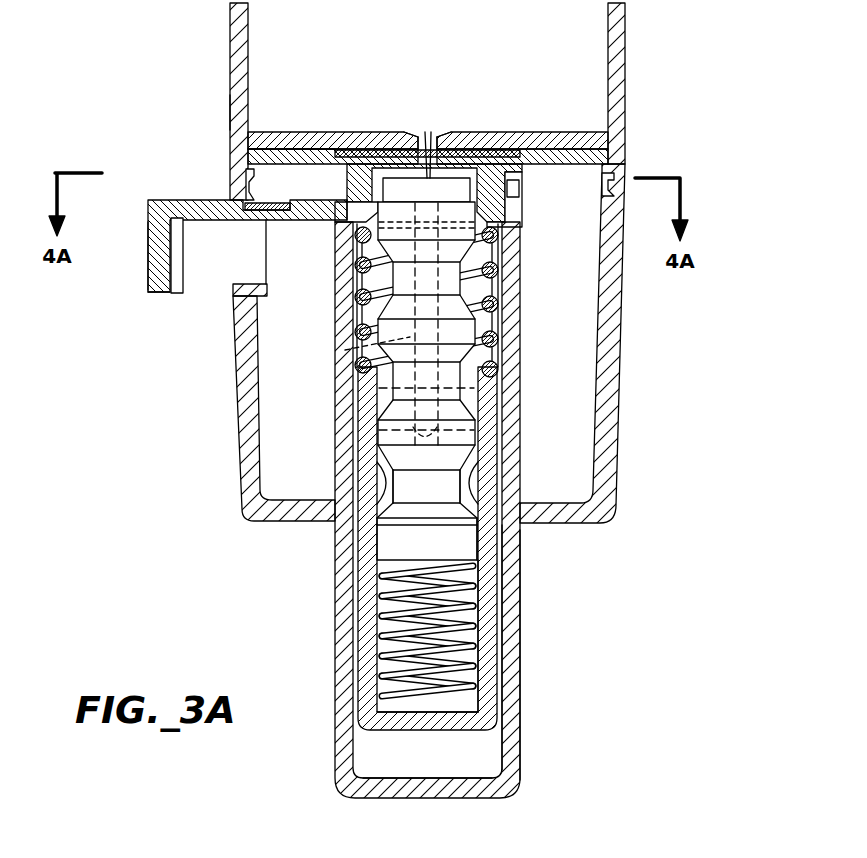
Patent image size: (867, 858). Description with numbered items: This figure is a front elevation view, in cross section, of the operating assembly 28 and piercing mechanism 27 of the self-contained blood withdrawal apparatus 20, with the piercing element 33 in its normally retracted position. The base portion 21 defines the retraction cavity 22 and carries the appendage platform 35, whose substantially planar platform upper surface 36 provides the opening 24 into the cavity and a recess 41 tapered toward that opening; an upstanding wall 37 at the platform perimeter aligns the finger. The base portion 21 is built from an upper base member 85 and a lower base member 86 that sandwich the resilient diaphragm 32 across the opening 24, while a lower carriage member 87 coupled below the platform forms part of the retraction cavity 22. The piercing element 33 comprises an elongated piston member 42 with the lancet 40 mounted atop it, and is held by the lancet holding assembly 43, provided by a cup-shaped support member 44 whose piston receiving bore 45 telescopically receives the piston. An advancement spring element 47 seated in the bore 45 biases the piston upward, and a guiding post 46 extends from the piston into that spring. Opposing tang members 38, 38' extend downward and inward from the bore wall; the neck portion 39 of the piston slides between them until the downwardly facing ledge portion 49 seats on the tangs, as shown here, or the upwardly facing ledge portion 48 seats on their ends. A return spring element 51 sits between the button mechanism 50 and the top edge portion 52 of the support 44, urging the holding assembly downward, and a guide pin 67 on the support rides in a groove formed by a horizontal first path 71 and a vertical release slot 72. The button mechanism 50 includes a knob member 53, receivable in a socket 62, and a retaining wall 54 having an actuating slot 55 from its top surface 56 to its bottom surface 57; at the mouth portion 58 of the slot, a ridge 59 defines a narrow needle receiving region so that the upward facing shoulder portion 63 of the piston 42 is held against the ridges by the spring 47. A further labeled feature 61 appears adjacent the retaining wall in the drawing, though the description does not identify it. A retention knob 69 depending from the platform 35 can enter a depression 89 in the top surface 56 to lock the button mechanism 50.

The blood withdrawal apparatus 20 is at (134, 48).
The base portion 21 is at (632, 76).
The cavity 22 is at (500, 323).
The opening 24 is at (422, 132).
The appendage piercing mechanism 27 is at (427, 112).
The operating assembly 28 is at (293, 408).
The diaphragm 32 is at (392, 164).
The piercing element 33 is at (350, 580).
The appendage platform 35 is at (232, 108).
The platform upper surface 36 is at (307, 131).
The upstanding wall 37 is at (230, 60).
The tang member 38 is at (370, 385).
The tang member 38' is at (534, 539).
The neck portion 39 is at (440, 497).
The lancet 40 is at (437, 186).
The recess 41 is at (466, 200).
The piston member 42 is at (352, 627).
The lancet holding assembly 43 is at (380, 736).
The cup-shaped support member 44 is at (486, 660).
The piston receiving bore 45 is at (474, 623).
The guiding post 46 is at (387, 653).
The advancement spring element 47 is at (470, 680).
The upwardly facing ledge portion 48 is at (505, 548).
The downwardly facing ledge portion 49 is at (467, 453).
The button mechanism 50 is at (150, 298).
The return spring element 51 is at (500, 317).
The top edge portion 52 is at (500, 364).
The knob member 53 is at (150, 240).
The retaining wall 54 is at (175, 200).
The actuating slot 55 is at (273, 240).
The top surface 56 is at (210, 200).
The bottom surface 57 is at (150, 255).
The mouth portion 58 is at (510, 212).
The ridge 59 is at (519, 190).
The valve housing lip 61 is at (298, 210).
The socket 62 is at (262, 285).
The shoulder portion 63 is at (476, 192).
The guide pin 67 is at (462, 393).
The retention knob 69 is at (318, 213).
The first path 71 is at (500, 381).
The release slot 72 is at (345, 350).
The upper base member 85 is at (240, 142).
The lower base member 86 is at (240, 158).
The lower carriage member 87 is at (520, 760).
The depression 89 is at (266, 198).